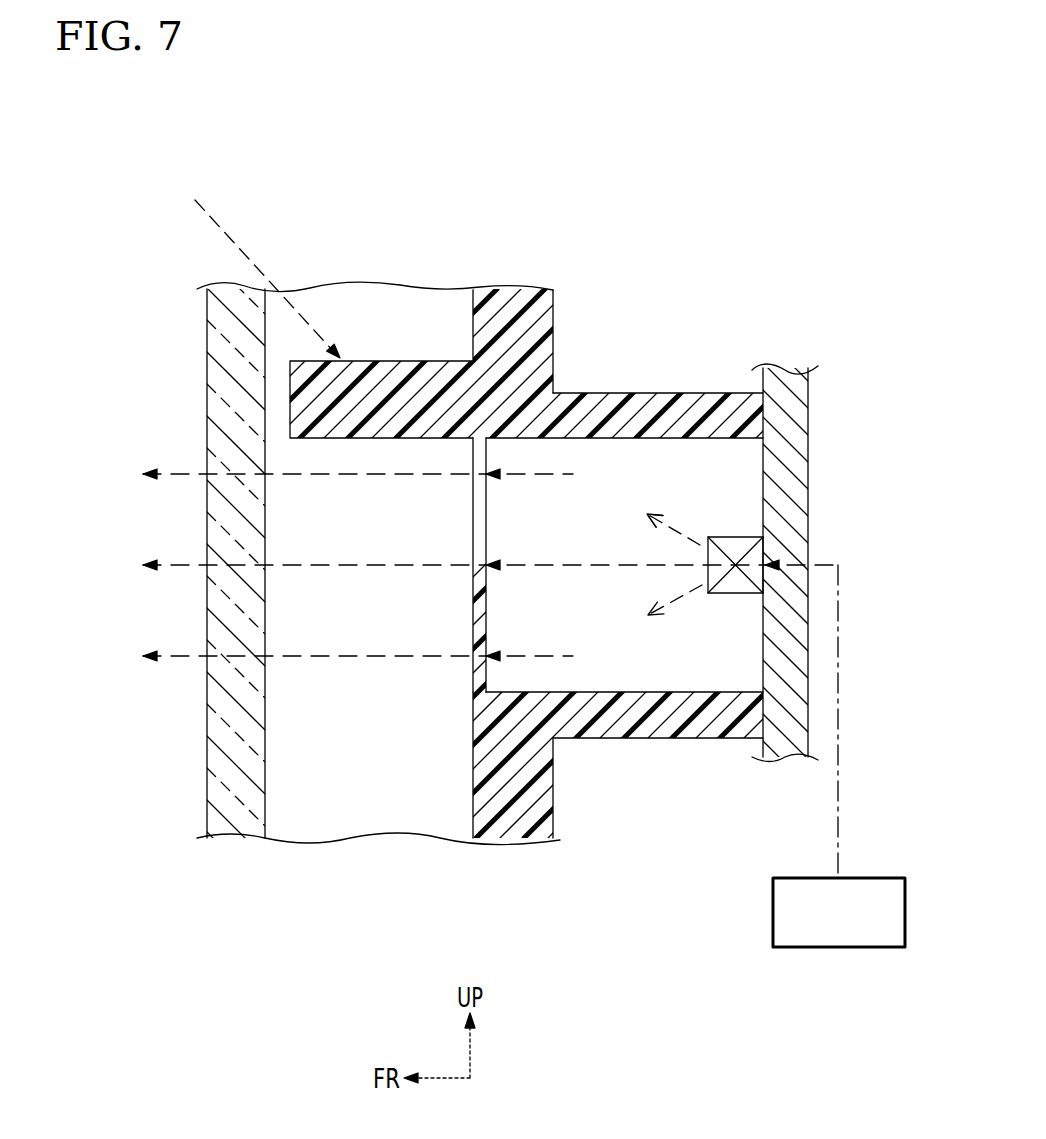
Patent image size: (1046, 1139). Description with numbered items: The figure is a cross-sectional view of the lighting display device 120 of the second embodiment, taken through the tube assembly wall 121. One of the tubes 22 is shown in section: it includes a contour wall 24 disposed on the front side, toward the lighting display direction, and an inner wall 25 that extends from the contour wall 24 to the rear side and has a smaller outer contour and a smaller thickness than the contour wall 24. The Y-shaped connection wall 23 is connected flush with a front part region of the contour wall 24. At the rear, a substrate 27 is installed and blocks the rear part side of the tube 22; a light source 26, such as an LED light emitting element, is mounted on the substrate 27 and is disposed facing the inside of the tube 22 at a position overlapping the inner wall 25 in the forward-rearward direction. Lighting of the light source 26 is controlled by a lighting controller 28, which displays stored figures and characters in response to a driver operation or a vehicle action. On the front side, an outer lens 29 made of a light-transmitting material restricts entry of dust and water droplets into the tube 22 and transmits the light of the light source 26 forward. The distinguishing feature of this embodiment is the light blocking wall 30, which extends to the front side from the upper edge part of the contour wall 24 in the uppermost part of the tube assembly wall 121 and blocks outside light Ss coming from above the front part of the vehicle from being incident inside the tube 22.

The lighting display device 120 is at (659, 213).
The tube 22 is at (523, 561).
The contour wall 24 is at (477, 394).
The inner wall 25 is at (680, 395).
The light blocking wall 30 is at (365, 368).
The connection wall 23 is at (475, 614).
The tube assembly wall 121 is at (462, 302).
The outer lens 29 is at (212, 345).
The substrate 27 is at (790, 420).
The light source 26 is at (741, 530).
The lighting controller 28 is at (838, 947).
The outside light Ss is at (257, 264).